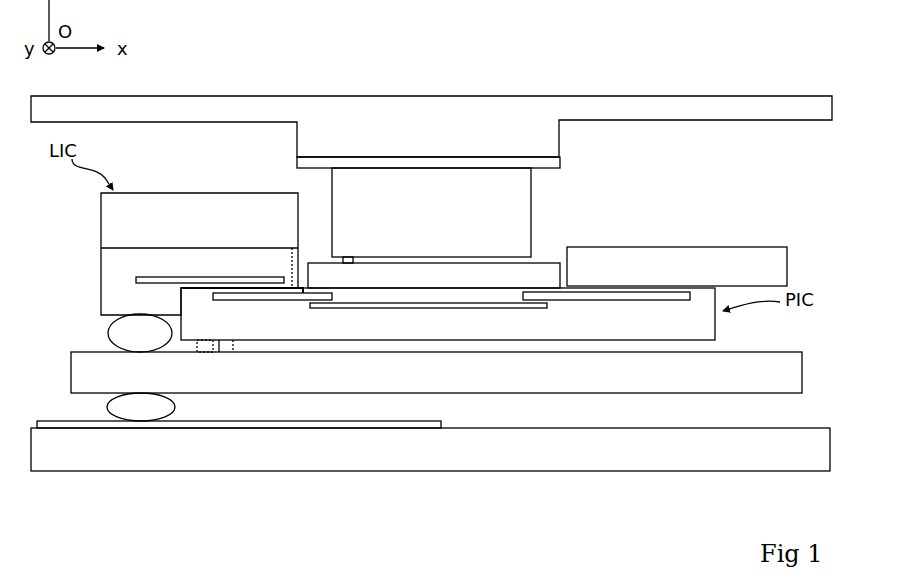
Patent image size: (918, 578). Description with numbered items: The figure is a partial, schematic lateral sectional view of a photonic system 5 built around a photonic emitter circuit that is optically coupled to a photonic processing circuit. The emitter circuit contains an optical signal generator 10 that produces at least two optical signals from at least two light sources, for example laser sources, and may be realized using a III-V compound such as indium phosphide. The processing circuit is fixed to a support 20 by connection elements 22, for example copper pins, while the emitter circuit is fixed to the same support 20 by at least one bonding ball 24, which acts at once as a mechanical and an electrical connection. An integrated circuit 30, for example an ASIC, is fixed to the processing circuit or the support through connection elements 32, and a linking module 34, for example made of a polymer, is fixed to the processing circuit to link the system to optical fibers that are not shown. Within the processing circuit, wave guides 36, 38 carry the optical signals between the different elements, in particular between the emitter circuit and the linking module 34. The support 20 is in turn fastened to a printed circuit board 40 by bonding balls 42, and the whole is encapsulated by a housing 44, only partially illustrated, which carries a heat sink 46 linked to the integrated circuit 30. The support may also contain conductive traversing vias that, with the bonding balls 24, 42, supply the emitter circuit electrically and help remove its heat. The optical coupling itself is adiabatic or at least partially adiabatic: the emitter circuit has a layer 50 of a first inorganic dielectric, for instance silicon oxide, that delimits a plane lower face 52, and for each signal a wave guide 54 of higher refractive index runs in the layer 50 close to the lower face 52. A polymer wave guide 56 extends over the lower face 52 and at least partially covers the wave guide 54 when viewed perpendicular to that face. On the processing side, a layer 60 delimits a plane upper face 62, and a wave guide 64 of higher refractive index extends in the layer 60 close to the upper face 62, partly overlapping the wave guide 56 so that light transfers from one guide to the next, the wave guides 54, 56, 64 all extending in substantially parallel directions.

The photonic system 5 is at (674, 75).
The optical signal generator 10 is at (158, 200).
The support 20 is at (765, 352).
The connection elements 22 is at (236, 346).
The bonding ball 24 is at (133, 335).
The integrated circuit 30 is at (532, 217).
The connection elements 32 is at (347, 257).
The linking module 34 is at (707, 247).
The wave guide 36 is at (508, 306).
The wave guide 38 is at (614, 302).
The printed circuit board 40 is at (738, 458).
The bonding balls 42 is at (130, 410).
The housing 44 is at (504, 120).
The heat sink 46 is at (375, 157).
The layer 50 is at (118, 297).
The lower face 52 is at (300, 294).
The wave guide 54 is at (148, 279).
The wave guide 56 is at (207, 289).
The layer 60 is at (298, 312).
The upper face 62 is at (305, 300).
The wave guide 64 is at (266, 297).